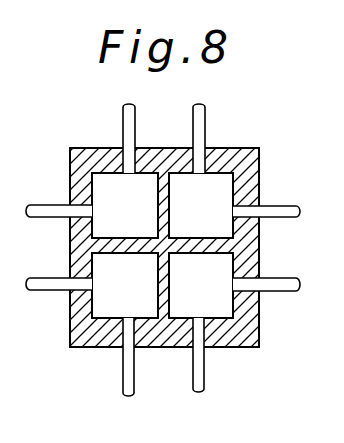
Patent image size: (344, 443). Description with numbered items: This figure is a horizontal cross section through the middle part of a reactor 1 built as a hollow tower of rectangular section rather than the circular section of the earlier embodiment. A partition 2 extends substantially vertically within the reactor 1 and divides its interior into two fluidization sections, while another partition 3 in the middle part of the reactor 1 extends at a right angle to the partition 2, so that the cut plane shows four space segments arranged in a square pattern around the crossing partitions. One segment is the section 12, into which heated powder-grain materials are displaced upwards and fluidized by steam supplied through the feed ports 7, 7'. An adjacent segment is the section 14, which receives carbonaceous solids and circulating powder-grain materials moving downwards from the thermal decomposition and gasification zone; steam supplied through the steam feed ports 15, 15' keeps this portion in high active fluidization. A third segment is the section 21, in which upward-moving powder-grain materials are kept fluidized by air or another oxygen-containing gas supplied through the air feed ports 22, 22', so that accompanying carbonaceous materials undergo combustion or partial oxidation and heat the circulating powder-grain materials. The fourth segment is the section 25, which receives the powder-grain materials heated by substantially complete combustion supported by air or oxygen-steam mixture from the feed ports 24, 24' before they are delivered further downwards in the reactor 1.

The reactor 1 is at (70, 167).
The partition 2 is at (169, 208).
The partition 3 is at (133, 253).
The feed port 7 is at (52, 191).
The feed port 7' is at (148, 133).
The section 12 is at (113, 192).
The section 14 is at (103, 299).
The steam feed port 15 is at (53, 263).
The steam feed port 15' is at (157, 368).
The section 21 is at (220, 297).
The air feed port 22 is at (226, 356).
The air feed port 22' is at (279, 266).
The feed port 24 is at (221, 136).
The feed port 24' is at (278, 193).
The section 25 is at (223, 191).